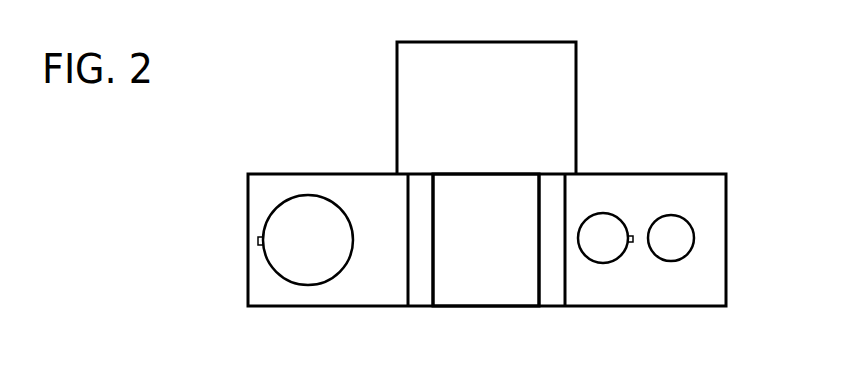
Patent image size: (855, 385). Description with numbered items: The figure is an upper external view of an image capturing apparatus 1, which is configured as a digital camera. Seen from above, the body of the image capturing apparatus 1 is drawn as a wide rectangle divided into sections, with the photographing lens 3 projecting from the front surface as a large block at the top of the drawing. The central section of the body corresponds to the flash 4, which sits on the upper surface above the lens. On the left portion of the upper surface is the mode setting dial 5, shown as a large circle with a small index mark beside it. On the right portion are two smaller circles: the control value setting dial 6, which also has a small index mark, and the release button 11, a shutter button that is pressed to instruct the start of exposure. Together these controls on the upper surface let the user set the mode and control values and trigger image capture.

The image capturing apparatus 1 is at (174, 127).
The photographing lens 3 is at (447, 42).
The flash 4 is at (480, 292).
The mode setting dial 5 is at (272, 222).
The control value setting dial 6 is at (603, 256).
The release button 11 is at (687, 239).